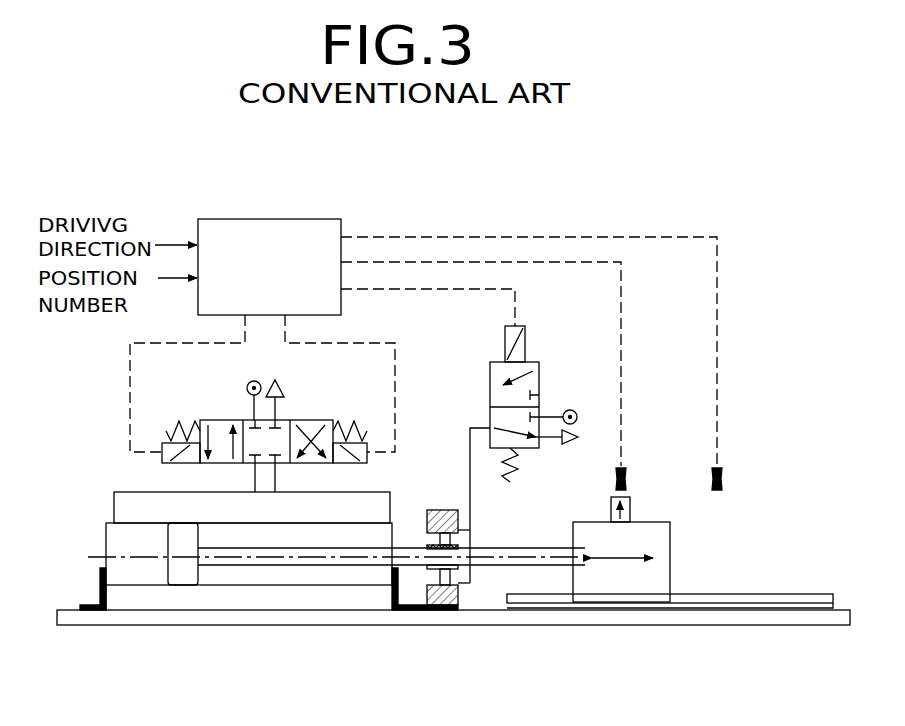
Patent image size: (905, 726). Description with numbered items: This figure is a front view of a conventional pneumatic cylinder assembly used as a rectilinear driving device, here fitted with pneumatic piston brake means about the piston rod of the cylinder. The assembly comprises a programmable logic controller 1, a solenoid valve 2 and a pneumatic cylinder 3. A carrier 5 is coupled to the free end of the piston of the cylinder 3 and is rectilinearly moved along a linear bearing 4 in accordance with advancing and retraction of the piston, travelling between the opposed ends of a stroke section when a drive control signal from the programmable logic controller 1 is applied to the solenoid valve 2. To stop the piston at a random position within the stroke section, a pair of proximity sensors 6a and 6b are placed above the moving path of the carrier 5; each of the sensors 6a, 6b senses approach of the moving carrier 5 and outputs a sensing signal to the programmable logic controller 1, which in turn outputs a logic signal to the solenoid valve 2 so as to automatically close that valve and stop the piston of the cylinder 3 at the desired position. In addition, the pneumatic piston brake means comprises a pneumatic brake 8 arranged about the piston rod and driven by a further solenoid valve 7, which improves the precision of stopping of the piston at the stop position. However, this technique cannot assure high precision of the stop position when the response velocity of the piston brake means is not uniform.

The programmable logic controller 1 is at (328, 222).
The solenoid valve 2 is at (300, 420).
The pneumatic cylinder 3 is at (308, 578).
The linear bearing 4 is at (755, 596).
The carrier 5 is at (655, 548).
The proximity sensor 6a is at (625, 470).
The proximity sensor 6b is at (722, 472).
The solenoid valve 7 is at (539, 380).
The pneumatic brake 8 is at (425, 582).